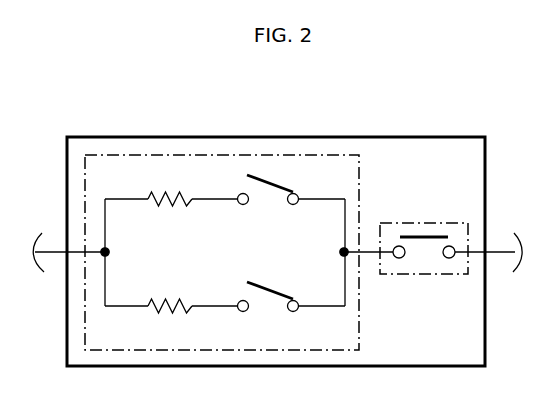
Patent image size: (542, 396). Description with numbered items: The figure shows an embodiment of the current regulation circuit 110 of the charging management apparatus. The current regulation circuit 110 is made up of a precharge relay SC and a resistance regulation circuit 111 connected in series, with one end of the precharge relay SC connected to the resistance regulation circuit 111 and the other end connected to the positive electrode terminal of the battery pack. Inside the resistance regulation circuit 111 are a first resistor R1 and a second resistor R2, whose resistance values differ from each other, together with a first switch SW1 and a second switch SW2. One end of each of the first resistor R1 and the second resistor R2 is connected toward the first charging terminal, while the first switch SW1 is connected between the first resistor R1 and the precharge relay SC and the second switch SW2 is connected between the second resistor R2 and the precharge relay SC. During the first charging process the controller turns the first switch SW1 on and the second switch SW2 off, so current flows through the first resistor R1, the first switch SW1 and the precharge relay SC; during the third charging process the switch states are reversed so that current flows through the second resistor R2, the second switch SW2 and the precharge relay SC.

The current regulation circuit 110 is at (425, 137).
The resistance regulation circuit 111 is at (254, 252).
The precharge relay SC is at (424, 223).
The first resistor R1 is at (170, 214).
The second resistor R2 is at (170, 320).
The first switch SW1 is at (268, 206).
The second switch SW2 is at (268, 312).